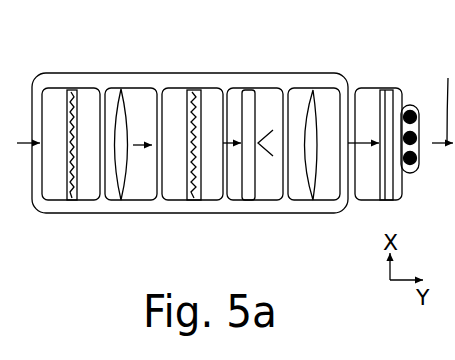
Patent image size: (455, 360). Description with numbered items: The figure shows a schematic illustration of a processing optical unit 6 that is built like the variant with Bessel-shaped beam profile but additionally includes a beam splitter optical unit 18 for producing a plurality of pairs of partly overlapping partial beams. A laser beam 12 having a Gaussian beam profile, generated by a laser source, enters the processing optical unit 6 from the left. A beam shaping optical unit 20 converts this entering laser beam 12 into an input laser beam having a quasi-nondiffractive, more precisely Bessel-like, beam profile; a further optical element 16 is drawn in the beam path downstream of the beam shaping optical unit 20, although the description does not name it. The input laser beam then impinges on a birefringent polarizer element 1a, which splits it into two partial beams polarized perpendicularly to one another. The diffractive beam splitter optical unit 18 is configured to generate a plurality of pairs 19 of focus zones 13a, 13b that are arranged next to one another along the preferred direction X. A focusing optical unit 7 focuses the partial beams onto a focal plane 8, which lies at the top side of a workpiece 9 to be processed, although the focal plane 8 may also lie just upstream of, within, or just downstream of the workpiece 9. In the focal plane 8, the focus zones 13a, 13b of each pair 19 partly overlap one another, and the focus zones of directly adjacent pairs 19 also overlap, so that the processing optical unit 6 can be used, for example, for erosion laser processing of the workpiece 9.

The processing optical unit 6 is at (79, 73).
The beam shaping optical unit 20 is at (52, 88).
The lens 16 is at (130, 88).
The beam splitter optical unit 18 is at (175, 88).
The birefringent polarizer element 1a is at (267, 88).
The focusing optical unit 7 is at (308, 88).
The workpiece 9 is at (383, 92).
The focal plane 8 is at (381, 201).
The focus zone 13a is at (410, 109).
The focus zone 13b is at (415, 155).
The pair of focus zones 19 is at (419, 120).
The laser beam 12 is at (27, 140).